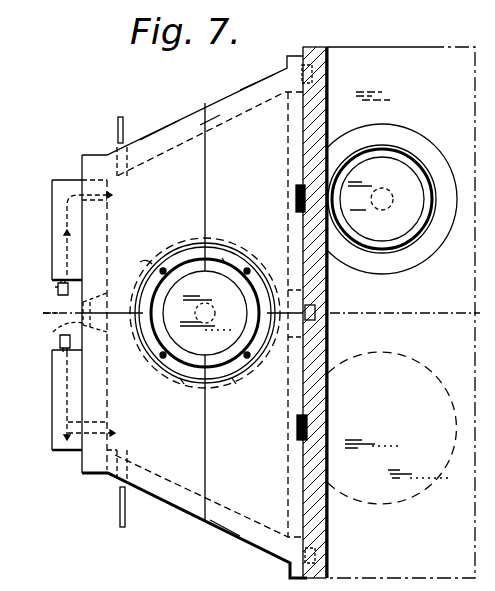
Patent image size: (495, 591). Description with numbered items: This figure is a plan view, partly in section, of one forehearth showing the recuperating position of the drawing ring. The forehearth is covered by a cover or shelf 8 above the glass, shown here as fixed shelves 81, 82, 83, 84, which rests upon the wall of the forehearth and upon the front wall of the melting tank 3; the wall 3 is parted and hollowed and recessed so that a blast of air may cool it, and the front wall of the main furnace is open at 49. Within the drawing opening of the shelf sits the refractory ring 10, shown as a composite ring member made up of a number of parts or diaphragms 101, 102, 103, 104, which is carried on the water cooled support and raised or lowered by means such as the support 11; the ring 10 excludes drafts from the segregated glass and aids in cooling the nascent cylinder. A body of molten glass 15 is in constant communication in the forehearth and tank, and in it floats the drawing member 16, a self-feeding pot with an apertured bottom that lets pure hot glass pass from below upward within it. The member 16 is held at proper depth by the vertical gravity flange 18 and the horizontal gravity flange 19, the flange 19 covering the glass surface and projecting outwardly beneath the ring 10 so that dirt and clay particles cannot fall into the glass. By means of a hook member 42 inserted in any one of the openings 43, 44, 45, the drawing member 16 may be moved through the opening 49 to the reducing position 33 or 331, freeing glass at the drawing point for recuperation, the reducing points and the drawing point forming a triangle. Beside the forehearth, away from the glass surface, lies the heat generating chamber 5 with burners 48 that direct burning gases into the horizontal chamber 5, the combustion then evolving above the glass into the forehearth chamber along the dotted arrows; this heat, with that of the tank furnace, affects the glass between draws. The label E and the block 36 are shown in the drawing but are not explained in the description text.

The front wall of the melting tank 3 is at (326, 312).
The heating chamber 5 is at (60, 190).
The cover or shelf 8 is at (261, 317).
The fixed shelf 81 is at (158, 160).
The fixed shelf 82 is at (250, 117).
The fixed shelf 83 is at (170, 492).
The fixed shelf 84 is at (226, 518).
The refractory ring 10 is at (205, 313).
The ring diaphragm 101 is at (152, 264).
The ring diaphragm 102 is at (223, 260).
The ring diaphragm 103 is at (182, 370).
The ring diaphragm 104 is at (236, 370).
The support 11 is at (249, 268).
The body of molten glass 15 is at (436, 58).
The drawing member 16 is at (170, 325).
The vertical gravity flange 18 is at (212, 265).
The horizontal gravity flange 19 is at (136, 290).
The reducing position 33 is at (428, 368).
The reducing position 331 is at (400, 175).
The blocks 36 is at (296, 196).
The hook member 42 is at (118, 518).
The opening 43 is at (110, 485).
The opening 44 is at (405, 178).
The opening 45 is at (210, 132).
The burner 48 is at (58, 290).
The opening in front wall 49 is at (320, 105).
The section line E is at (41, 315).